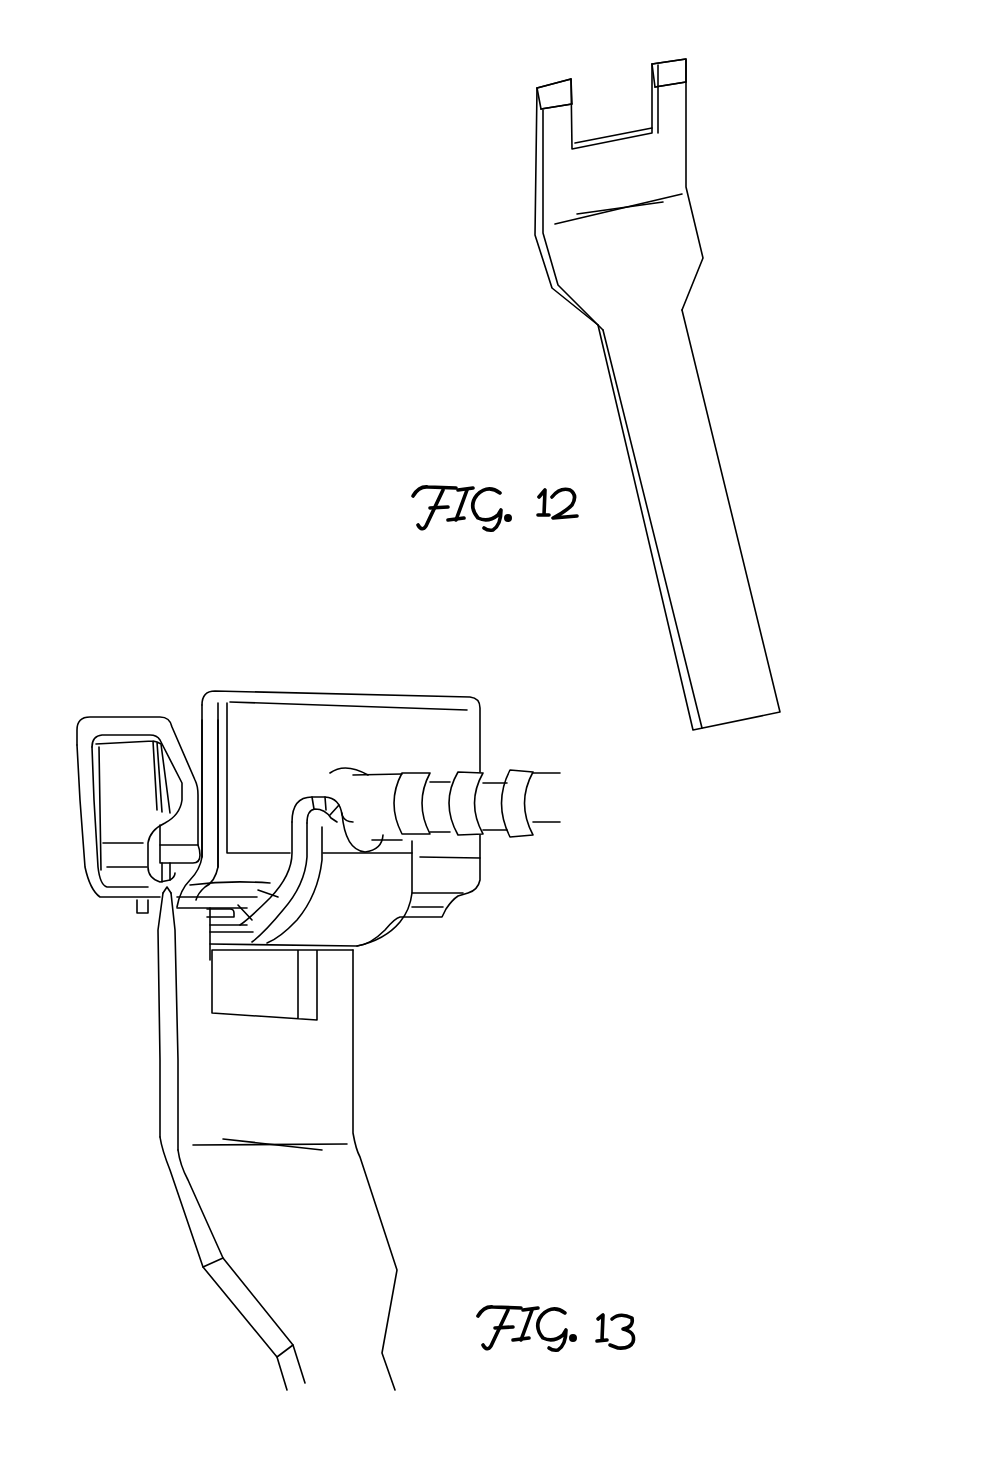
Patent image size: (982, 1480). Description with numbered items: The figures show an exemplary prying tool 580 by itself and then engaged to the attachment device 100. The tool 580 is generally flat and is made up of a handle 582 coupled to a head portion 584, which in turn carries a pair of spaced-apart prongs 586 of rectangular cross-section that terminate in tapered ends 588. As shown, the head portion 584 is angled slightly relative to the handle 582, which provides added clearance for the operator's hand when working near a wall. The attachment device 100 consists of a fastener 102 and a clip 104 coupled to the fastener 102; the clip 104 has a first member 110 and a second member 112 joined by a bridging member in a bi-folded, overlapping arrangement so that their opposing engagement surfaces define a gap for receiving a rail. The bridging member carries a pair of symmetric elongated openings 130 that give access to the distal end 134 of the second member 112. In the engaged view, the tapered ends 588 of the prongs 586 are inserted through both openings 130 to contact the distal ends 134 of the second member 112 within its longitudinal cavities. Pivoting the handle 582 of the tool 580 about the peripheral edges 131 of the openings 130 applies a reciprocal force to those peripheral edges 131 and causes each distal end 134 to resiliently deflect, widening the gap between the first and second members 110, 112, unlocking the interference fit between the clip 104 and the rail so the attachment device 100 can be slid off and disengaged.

In FIG. 13, the attachment device 100 is at (267, 686).
In FIG. 13, the fastener 102 is at (388, 760).
In FIG. 13, the clip 104 is at (70, 714).
In FIG. 13, the first member 110 is at (205, 745).
In FIG. 13, the second member 112 is at (187, 795).
In FIG. 13, the opening 130 is at (147, 910).
In FIG. 13, the peripheral edge 131 is at (160, 897).
In FIG. 13, the distal end 134 is at (150, 883).
In FIG. 12, the tool 580 is at (660, 371).
In FIG. 13, the tool 580 is at (276, 1138).
In FIG. 12, the handle 582 is at (677, 418).
In FIG. 13, the handle 582 is at (386, 1230).
In FIG. 12, the head portion 584 is at (670, 162).
In FIG. 13, the head portion 584 is at (195, 1065).
In FIG. 12, the prongs 586 is at (557, 130).
In FIG. 13, the prongs 586 is at (187, 978).
In FIG. 12, the tapered ends 588 is at (664, 75).
In FIG. 13, the tapered ends 588 is at (158, 927).